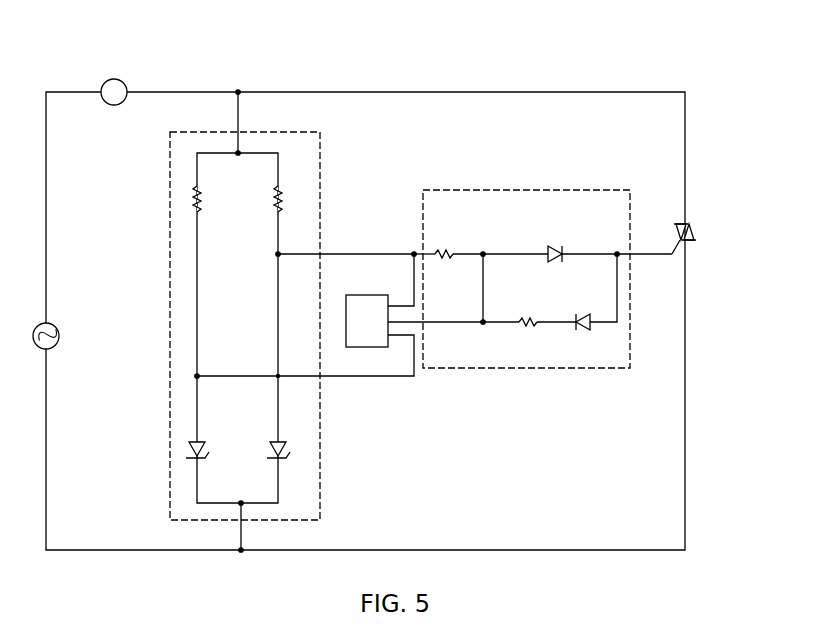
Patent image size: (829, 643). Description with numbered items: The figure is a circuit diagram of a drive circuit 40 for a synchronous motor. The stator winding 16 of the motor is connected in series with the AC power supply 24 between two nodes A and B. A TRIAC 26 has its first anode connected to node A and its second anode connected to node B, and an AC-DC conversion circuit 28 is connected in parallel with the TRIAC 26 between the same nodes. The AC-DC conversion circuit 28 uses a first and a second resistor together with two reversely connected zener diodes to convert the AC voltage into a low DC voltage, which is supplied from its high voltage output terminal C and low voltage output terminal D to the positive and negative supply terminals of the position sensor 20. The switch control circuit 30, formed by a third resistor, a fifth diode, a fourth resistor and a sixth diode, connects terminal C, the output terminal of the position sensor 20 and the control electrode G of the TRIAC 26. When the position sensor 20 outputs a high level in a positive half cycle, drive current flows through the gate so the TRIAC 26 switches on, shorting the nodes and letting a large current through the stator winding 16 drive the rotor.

The stator winding 16 is at (113, 105).
The position sensor 20 is at (368, 347).
The AC power supply 24 is at (57, 322).
The TRIAC 26 is at (700, 228).
The AC-DC conversion circuit 28 is at (320, 170).
The switch control circuit 30 is at (532, 188).
The drive circuit 40 is at (617, 77).